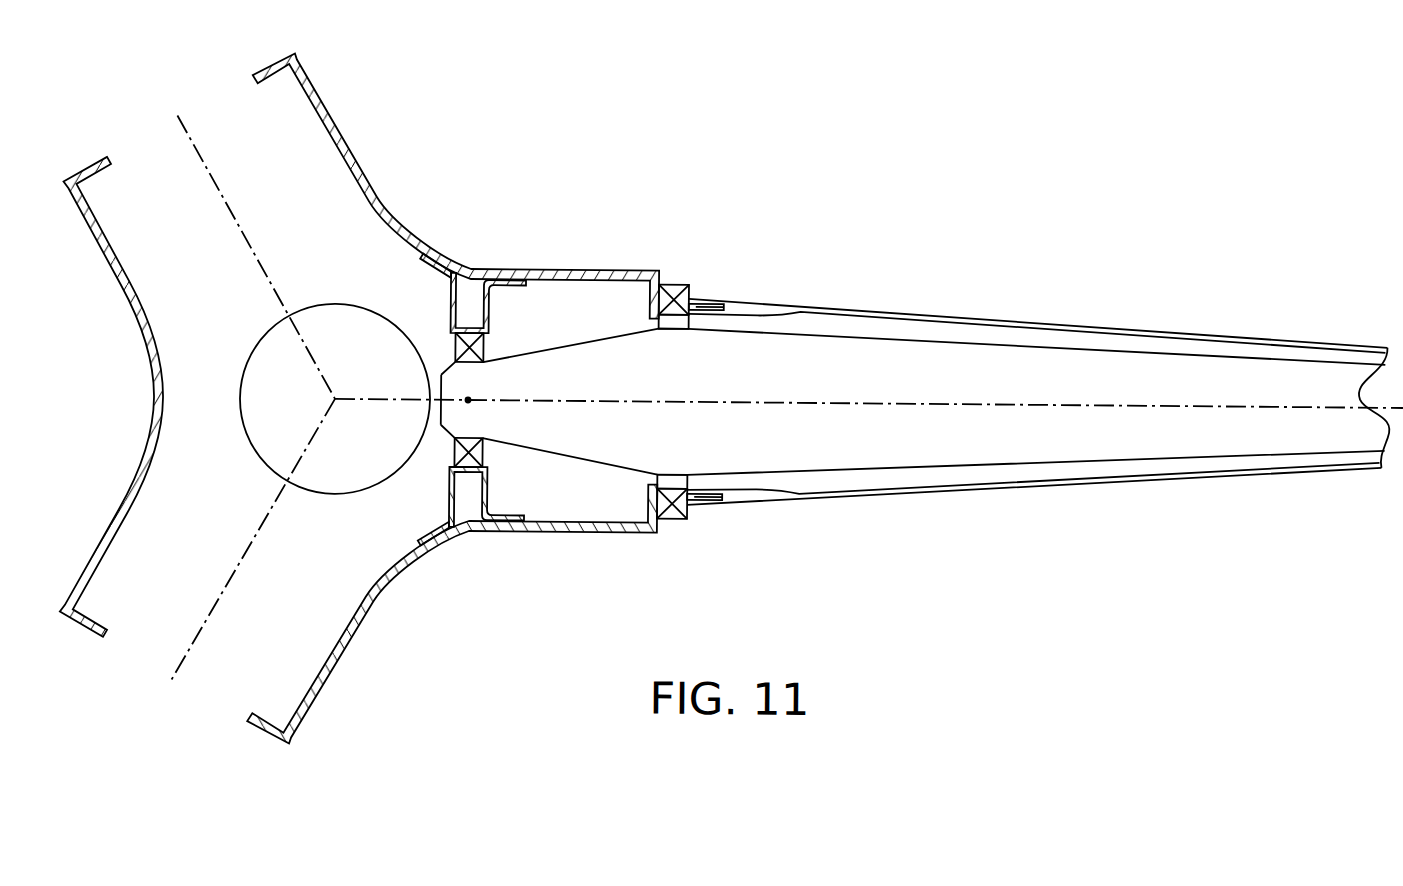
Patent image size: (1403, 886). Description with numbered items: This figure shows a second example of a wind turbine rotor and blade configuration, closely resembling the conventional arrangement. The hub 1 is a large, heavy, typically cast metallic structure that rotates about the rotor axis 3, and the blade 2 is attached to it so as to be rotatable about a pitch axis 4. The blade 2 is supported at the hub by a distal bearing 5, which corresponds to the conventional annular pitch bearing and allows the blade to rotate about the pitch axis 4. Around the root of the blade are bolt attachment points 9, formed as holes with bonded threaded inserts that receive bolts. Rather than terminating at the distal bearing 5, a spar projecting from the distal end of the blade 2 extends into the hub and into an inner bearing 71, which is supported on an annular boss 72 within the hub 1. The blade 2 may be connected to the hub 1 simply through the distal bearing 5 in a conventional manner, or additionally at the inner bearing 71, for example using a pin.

The hub 1 is at (155, 400).
The blade 2 is at (790, 308).
The rotor axis 3 is at (337, 399).
The pitch axis 4 is at (835, 399).
The distal bearing 5 is at (690, 519).
The bolt attachment points 9 is at (702, 306).
The inner bearing 71 is at (485, 458).
The annular boss 72 is at (473, 310).